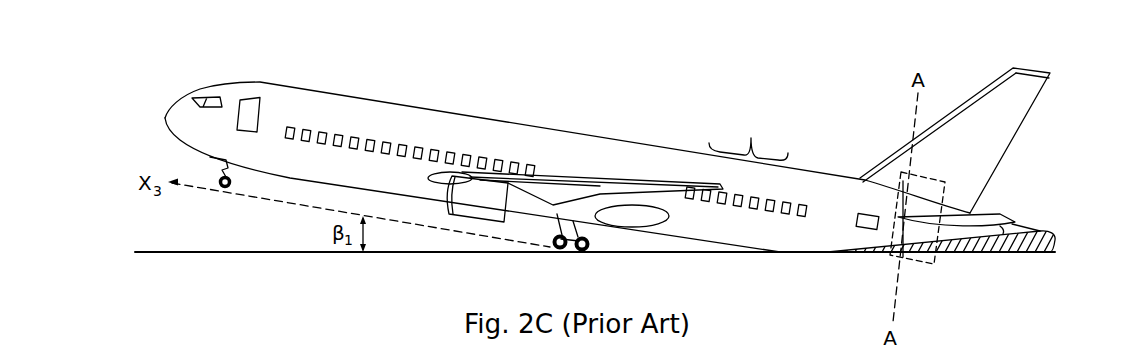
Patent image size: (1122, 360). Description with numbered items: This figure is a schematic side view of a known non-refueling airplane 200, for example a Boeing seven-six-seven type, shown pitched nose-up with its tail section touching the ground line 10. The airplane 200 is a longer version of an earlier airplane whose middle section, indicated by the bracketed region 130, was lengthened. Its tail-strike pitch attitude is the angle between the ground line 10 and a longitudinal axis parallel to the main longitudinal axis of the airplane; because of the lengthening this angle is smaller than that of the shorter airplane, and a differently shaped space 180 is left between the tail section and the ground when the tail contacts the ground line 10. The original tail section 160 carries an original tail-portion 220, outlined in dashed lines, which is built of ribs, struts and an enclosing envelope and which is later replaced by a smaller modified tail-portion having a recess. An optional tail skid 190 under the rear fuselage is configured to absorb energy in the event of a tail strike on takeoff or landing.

The ground line 10 is at (247, 255).
The non-refueling airplane 200 is at (817, 78).
The fuselage section 130 is at (748, 136).
The original tail-portion 220 is at (923, 176).
The original tail section 160 is at (857, 233).
The tail skid 190 is at (936, 256).
The space 180 is at (1005, 258).